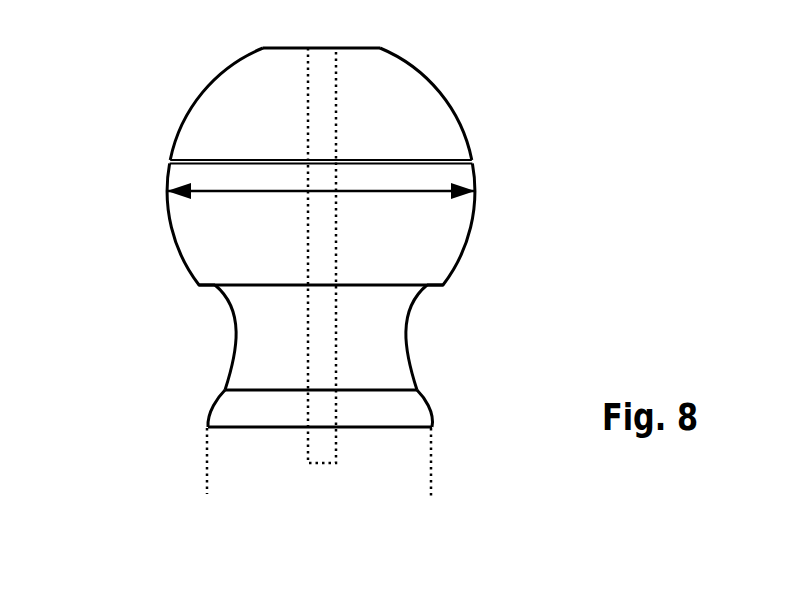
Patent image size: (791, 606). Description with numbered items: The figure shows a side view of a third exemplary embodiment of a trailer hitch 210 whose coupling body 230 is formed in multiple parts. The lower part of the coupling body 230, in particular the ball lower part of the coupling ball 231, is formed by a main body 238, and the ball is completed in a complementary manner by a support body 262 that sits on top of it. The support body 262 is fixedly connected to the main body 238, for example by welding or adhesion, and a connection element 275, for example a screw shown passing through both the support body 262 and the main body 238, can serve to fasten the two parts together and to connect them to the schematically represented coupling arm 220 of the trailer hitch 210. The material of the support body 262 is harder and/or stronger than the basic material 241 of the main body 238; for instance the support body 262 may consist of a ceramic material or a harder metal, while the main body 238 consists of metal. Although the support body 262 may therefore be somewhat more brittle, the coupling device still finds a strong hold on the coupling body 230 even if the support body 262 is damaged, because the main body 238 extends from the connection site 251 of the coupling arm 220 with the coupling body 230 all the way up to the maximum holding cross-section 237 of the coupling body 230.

The trailer hitch 210 is at (508, 157).
The coupling body 230 is at (463, 97).
The coupling ball 231 is at (400, 80).
The support body 262 is at (215, 112).
The basic material 241 is at (187, 138).
The main body 238 is at (188, 217).
The maximum holding cross-section 237 is at (407, 193).
The connection element 275 is at (318, 68).
The connection site 251 is at (392, 303).
The coupling arm 220 is at (418, 448).